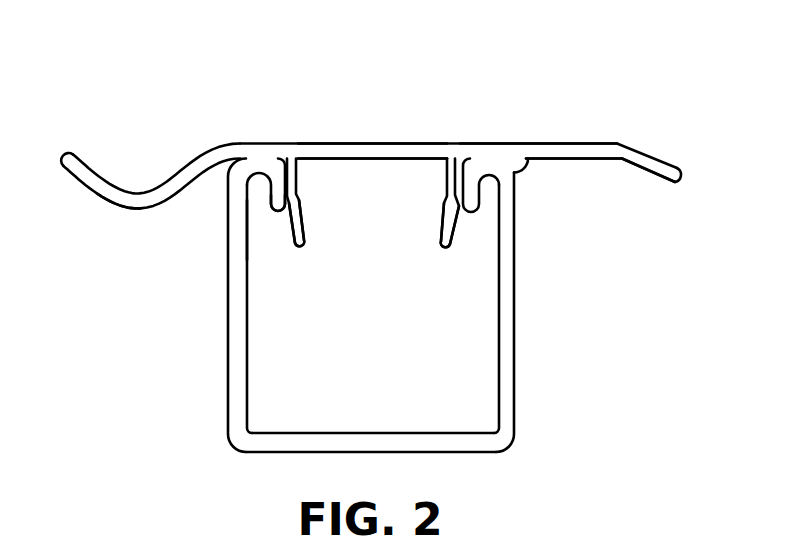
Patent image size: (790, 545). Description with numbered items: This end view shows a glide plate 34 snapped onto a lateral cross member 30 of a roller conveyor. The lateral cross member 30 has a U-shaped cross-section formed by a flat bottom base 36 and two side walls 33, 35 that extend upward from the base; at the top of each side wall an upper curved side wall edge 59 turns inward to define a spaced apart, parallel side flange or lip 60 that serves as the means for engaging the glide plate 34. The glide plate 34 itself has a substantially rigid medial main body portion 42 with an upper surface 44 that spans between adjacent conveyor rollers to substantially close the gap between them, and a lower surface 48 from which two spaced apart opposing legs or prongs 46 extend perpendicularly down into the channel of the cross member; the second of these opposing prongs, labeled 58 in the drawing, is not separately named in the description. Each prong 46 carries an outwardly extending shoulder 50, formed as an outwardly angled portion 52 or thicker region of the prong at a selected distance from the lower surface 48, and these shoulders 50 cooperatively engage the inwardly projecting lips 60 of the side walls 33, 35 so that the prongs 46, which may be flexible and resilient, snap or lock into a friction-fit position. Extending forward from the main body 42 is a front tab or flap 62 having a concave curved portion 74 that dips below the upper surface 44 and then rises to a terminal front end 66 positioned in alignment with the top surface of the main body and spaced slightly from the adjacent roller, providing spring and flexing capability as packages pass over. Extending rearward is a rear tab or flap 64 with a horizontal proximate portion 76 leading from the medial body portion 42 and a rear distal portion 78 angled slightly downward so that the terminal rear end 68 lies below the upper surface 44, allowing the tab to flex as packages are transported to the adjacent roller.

The lateral cross member 30 is at (349, 331).
The side wall 33 is at (240, 346).
The glide plate 34 is at (417, 139).
The side wall 35 is at (517, 283).
The flat bottom base 36 is at (473, 441).
The medial main body portion 42 is at (369, 142).
The upper surface 44 is at (290, 140).
The legs or prongs 46 is at (296, 196).
The lower surface 48 is at (388, 161).
The shoulder 50 is at (469, 218).
The outwardly angled portion 52 is at (290, 238).
The second leg 58 is at (448, 198).
The upper curved side wall edge 59 is at (270, 213).
The side flange or lip 60 is at (256, 188).
The front tab or flap 62 is at (135, 191).
The rear tab or flap 64 is at (562, 142).
The terminal front end 66 is at (64, 148).
The terminal rear end 68 is at (685, 177).
The curved portion 74 is at (100, 197).
The horizontal proximate portion 76 is at (555, 160).
The rear distal portion 78 is at (653, 169).